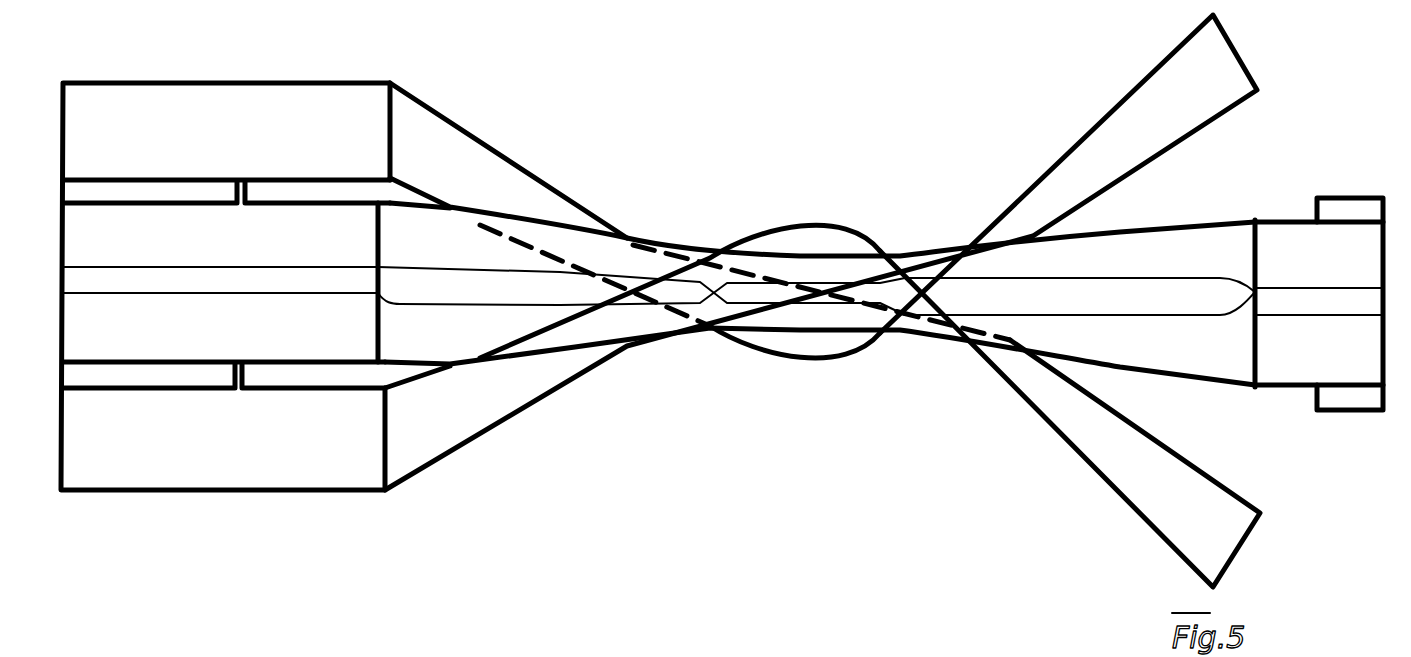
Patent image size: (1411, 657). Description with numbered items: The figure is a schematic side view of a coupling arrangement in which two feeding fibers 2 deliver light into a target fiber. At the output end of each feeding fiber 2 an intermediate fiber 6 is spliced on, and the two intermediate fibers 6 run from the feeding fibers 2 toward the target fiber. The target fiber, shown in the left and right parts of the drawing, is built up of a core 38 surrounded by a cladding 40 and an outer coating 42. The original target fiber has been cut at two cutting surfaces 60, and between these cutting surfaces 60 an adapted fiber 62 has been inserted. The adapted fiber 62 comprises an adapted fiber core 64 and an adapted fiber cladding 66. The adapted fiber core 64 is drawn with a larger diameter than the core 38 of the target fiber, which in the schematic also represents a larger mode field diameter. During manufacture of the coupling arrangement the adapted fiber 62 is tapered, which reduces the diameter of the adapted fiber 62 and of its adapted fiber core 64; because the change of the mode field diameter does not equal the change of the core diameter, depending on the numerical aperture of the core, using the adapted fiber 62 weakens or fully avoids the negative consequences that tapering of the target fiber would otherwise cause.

The feeding fiber 2 is at (268, 100).
The intermediate fiber 6 is at (490, 170).
The core 38 is at (172, 282).
The cladding 40 is at (293, 340).
The coating 42 is at (128, 372).
The cutting surface 60 is at (387, 243).
The adapted fiber 62 is at (1173, 229).
The adapted fiber core 64 is at (513, 288).
The adapted fiber cladding 66 is at (415, 342).